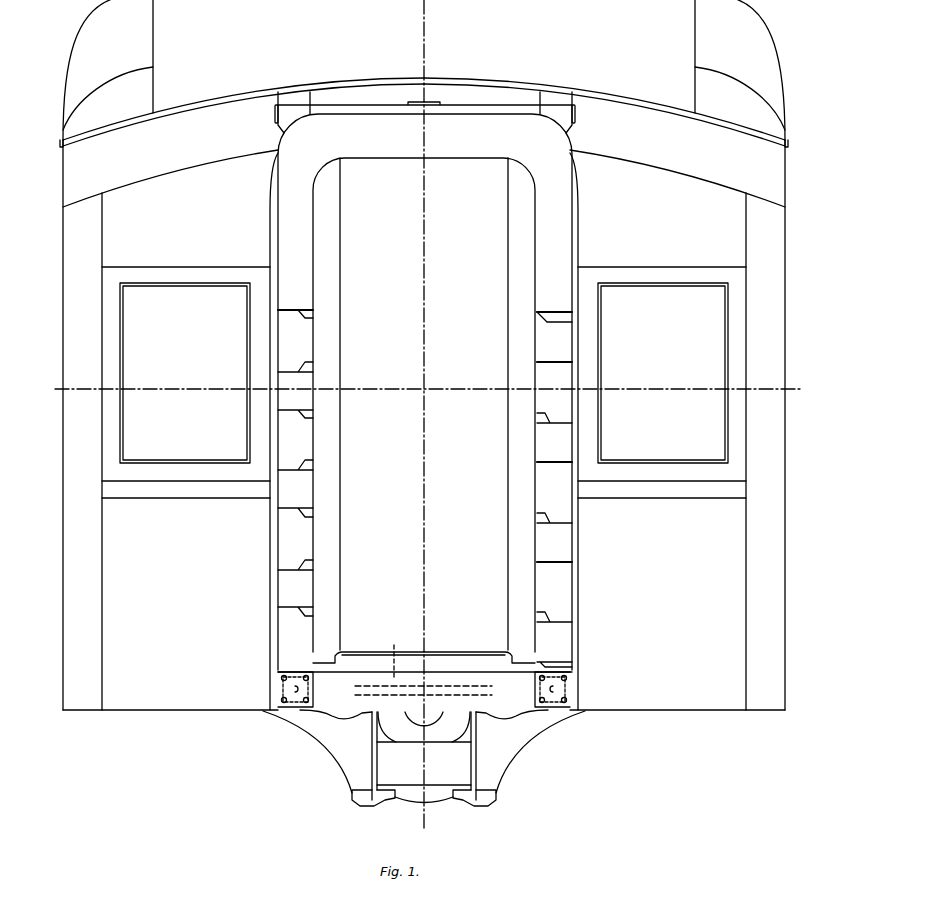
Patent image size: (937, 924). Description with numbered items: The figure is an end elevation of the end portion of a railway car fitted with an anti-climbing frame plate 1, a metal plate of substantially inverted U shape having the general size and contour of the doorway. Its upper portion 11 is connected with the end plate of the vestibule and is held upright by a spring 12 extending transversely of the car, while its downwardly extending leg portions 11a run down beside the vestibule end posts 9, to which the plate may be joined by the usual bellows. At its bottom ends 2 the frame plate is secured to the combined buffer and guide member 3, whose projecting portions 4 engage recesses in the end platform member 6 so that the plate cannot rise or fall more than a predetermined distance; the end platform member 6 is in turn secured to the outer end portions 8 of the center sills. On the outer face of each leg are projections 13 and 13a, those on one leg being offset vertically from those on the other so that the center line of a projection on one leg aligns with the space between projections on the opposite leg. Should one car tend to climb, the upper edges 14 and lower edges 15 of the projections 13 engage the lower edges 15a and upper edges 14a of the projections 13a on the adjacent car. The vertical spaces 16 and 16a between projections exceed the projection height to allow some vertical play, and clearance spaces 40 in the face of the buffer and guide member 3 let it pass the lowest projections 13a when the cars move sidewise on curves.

The frame plate 1 is at (560, 573).
The bottom ends of the frame plate 2 is at (587, 690).
The combined buffer and guide member 3 is at (425, 758).
The projecting portions 4 is at (394, 653).
The end platform member 6 is at (440, 740).
The outer end portions of the center sills 8 is at (372, 743).
The vestibule end posts 9 is at (421, 491).
The upper portion of the frame plate 11 is at (450, 122).
The downwardly extending leg portion 11a is at (300, 237).
The transverse spring 12 is at (380, 108).
The projections 13 is at (545, 344).
The upper edges of the projections 14 is at (545, 322).
The lower edges of the projections 15 is at (537, 362).
The vertical spaces between projections 16 is at (548, 386).
The projections 13a is at (303, 386).
The upper edges of the projections 14a is at (313, 362).
The lower edges of the projections 15a is at (313, 419).
The vertical spaces between projections 16a is at (303, 342).
The clearance spaces 40 is at (478, 695).